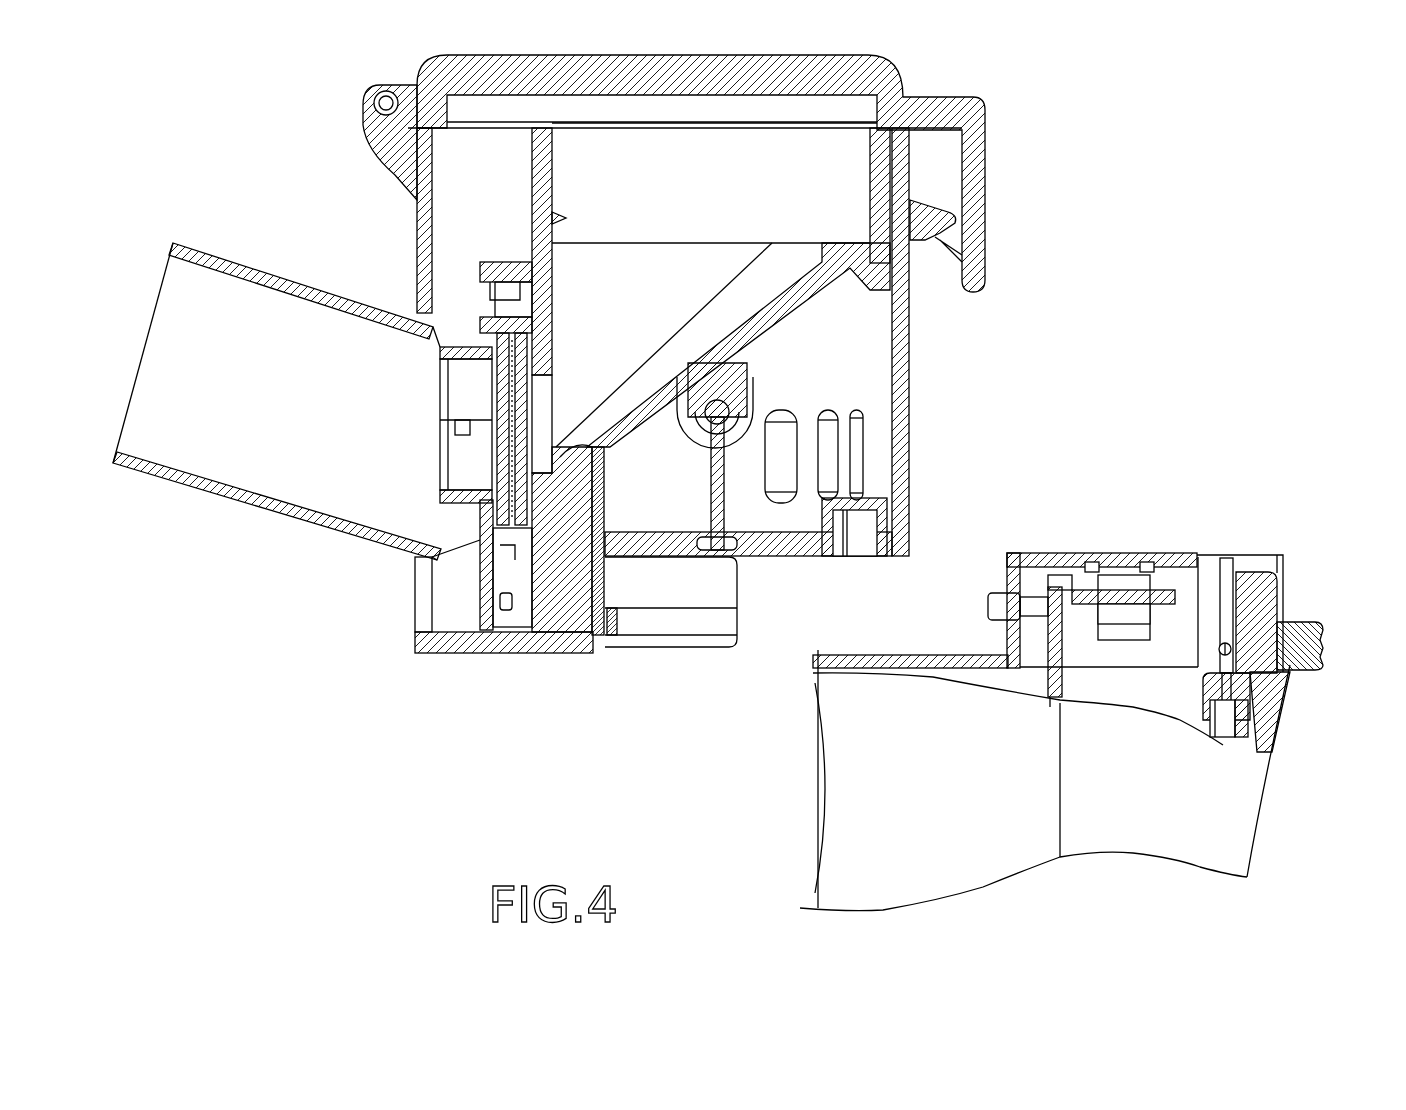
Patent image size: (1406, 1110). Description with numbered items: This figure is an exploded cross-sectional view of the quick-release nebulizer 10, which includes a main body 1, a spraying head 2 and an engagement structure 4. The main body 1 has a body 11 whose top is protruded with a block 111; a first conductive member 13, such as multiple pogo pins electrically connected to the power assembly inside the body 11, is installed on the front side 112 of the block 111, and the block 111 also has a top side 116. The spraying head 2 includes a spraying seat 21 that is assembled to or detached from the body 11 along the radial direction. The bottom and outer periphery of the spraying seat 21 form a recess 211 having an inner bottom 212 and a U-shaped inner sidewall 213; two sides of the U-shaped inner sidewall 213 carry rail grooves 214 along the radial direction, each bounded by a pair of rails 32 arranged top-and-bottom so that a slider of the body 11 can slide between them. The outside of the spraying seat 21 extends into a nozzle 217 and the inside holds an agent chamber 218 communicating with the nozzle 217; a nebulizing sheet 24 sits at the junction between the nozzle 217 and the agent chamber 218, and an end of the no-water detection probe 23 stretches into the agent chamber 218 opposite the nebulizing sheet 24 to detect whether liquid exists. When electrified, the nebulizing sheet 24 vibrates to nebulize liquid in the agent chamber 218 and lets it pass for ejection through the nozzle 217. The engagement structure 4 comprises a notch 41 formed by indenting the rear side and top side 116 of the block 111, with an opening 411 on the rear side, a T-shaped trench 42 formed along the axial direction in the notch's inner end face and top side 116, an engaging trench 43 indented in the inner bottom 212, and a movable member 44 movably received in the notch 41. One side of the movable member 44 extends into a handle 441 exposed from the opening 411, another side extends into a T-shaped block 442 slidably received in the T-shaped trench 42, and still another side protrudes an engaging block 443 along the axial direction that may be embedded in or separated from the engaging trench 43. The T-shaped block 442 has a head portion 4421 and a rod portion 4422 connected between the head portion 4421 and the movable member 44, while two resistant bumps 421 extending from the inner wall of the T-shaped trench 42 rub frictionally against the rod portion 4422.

The quick-release nebulizer 10 is at (727, 27).
The main body 1 is at (1257, 827).
The body 11 is at (1242, 804).
The block 111 is at (1183, 559).
The front side 112 is at (1007, 655).
The top side 116 is at (1178, 552).
The first conductive member 13 is at (982, 603).
The spraying head 2 is at (913, 393).
The spraying seat 21 is at (913, 350).
The recess 211 is at (704, 583).
The inner bottom 212 is at (820, 557).
The U-shaped inner sidewall 213 is at (713, 571).
The rail grooves 214 is at (707, 618).
The nozzle 217 is at (210, 487).
The agent chamber 218 is at (650, 270).
The no-water detection probe 23 is at (600, 597).
The nebulizing sheet 24 is at (500, 388).
The rails 32 is at (715, 603).
The engagement structure 4 is at (1323, 654).
The notch 41 is at (1283, 556).
The opening 411 is at (1283, 588).
The T-shaped trench 42 is at (1228, 580).
The resistant bumps 421 is at (1232, 649).
The engaging trench 43 is at (857, 540).
The movable member 44 is at (1258, 688).
The handle 441 is at (1300, 628).
The T-shaped block 442 is at (1223, 793).
The head portion 4421 is at (1190, 735).
The rod portion 4422 is at (1222, 737).
The engaging block 443 is at (1262, 572).